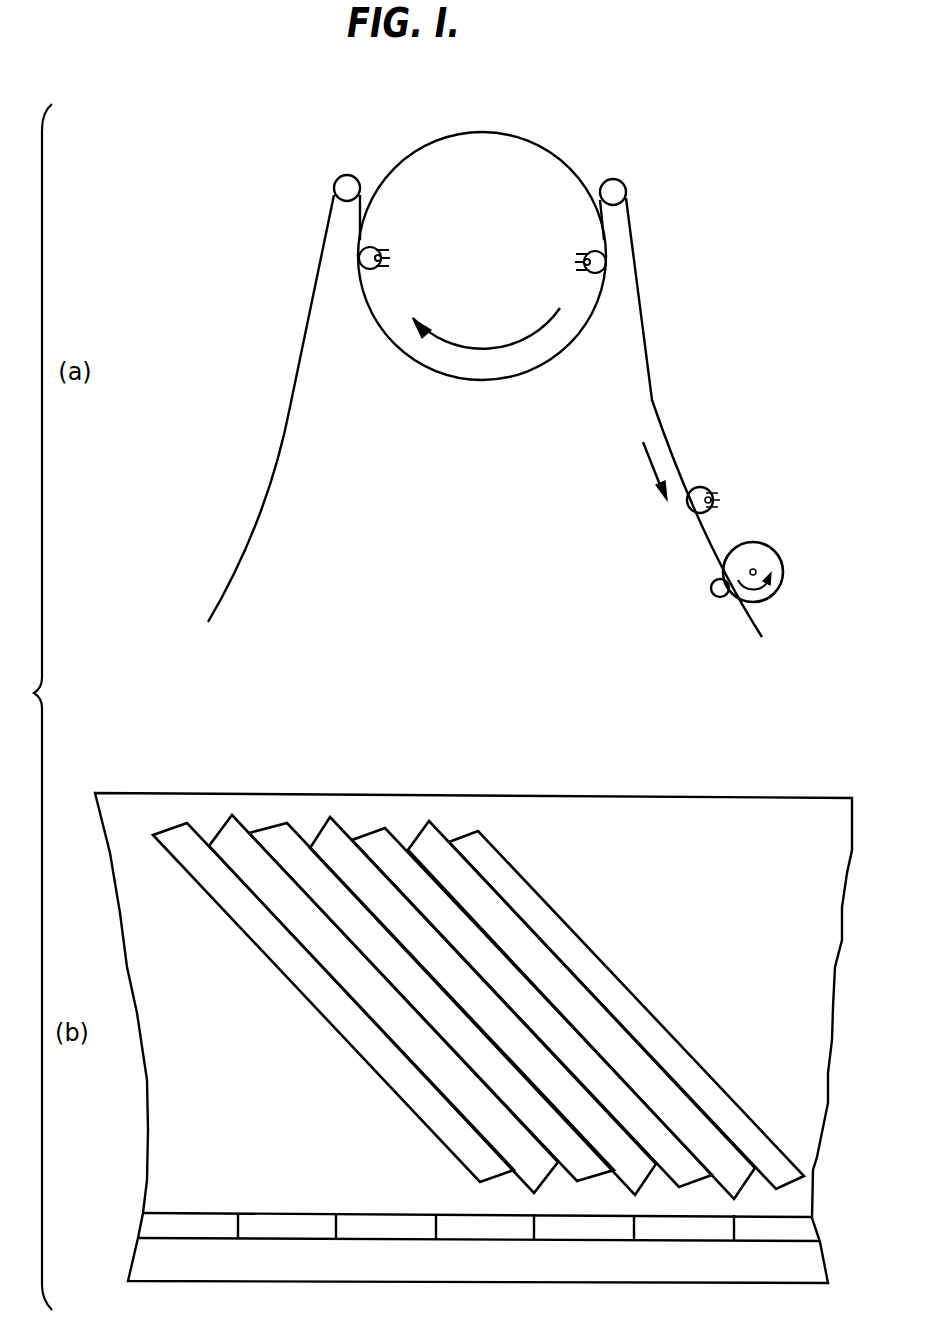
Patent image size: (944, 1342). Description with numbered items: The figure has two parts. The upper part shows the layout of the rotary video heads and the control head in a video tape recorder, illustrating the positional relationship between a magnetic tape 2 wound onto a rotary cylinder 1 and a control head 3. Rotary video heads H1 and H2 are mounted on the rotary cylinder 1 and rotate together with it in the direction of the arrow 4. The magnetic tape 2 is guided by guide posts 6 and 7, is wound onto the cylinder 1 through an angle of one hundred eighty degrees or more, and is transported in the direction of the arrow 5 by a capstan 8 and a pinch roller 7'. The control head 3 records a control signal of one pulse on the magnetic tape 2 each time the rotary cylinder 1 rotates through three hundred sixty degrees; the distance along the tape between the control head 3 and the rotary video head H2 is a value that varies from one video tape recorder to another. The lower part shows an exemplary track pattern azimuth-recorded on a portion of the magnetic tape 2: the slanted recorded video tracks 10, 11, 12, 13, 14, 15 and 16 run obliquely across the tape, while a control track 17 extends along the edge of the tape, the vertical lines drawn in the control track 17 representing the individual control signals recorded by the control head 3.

The rotary cylinder 1 is at (507, 135).
The magnetic tape 2 is at (265, 503).
The control head 3 is at (705, 488).
The arrow 4 is at (513, 342).
The arrow 5 is at (650, 462).
The guide post 6 is at (347, 176).
The guide post 7 is at (623, 175).
The pinch roller 7' is at (757, 551).
The capstan 8 is at (719, 598).
The rotary video head H1 is at (359, 258).
The rotary video head H2 is at (607, 263).
The recorded video track 10 is at (193, 833).
The recorded video track 11 is at (236, 832).
The recorded video track 12 is at (281, 830).
The recorded video track 13 is at (334, 836).
The recorded video track 14 is at (390, 843).
The recorded video track 15 is at (432, 833).
The recorded video track 16 is at (487, 848).
The control track 17 is at (198, 1213).